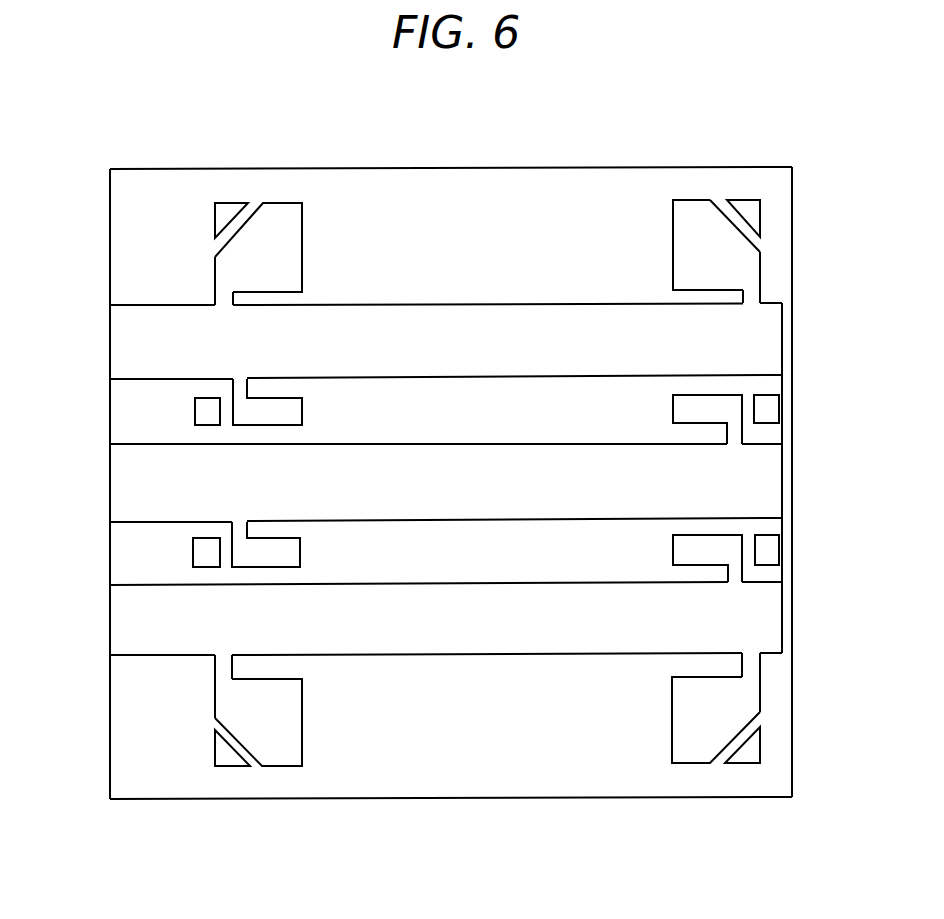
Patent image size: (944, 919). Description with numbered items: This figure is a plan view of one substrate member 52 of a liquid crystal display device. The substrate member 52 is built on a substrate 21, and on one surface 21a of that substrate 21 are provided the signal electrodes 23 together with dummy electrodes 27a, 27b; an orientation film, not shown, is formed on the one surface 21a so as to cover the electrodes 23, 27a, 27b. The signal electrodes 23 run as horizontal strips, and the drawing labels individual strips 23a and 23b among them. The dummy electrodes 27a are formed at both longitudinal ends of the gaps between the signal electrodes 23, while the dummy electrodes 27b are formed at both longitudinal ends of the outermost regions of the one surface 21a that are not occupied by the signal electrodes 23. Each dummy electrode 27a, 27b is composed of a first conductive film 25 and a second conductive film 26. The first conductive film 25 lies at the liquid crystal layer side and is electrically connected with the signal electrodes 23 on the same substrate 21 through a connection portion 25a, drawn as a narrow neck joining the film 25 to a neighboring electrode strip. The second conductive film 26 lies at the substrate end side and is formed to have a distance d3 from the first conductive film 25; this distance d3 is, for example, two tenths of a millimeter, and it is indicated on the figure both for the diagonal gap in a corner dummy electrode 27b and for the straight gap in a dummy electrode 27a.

The substrate member 52 is at (805, 126).
The substrate 21 is at (556, 186).
The one surface of the substrate 21a is at (118, 218).
The signal electrodes 23 is at (120, 498).
The stripe electrode (first) 23a is at (120, 323).
The connecting electrode strip 23b is at (768, 326).
The first conductive film 25 is at (284, 217).
The connection portion 25a is at (222, 296).
The second conductive film 26 is at (227, 213).
The dummy electrodes 27a is at (354, 385).
The dummy electrodes 27b is at (320, 112).
The distance d3 is at (215, 238).